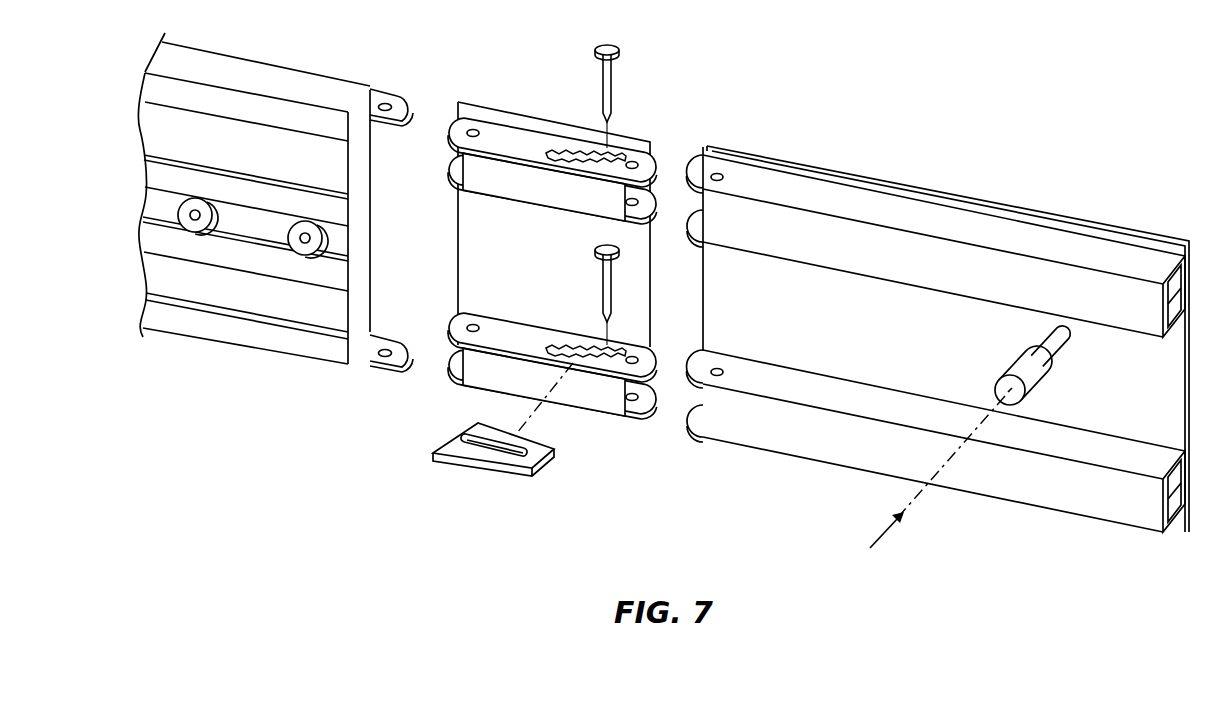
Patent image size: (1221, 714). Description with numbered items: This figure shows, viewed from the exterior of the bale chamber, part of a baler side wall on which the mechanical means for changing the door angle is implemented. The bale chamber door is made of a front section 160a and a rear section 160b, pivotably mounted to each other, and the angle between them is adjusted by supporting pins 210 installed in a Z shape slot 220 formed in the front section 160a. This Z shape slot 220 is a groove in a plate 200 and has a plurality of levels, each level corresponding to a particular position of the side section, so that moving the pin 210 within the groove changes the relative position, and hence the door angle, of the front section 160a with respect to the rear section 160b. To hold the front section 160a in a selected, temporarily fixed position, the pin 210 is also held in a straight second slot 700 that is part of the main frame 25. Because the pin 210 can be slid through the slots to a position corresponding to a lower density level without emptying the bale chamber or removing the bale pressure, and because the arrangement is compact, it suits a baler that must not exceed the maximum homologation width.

The main frame 25 is at (256, 42).
The front section 160a is at (531, 241).
The rear section 160b is at (757, 466).
The plate 200 is at (523, 140).
The supporting pin 210 is at (615, 87).
The Z shape slot 220 is at (615, 155).
The second slot 700 is at (517, 445).